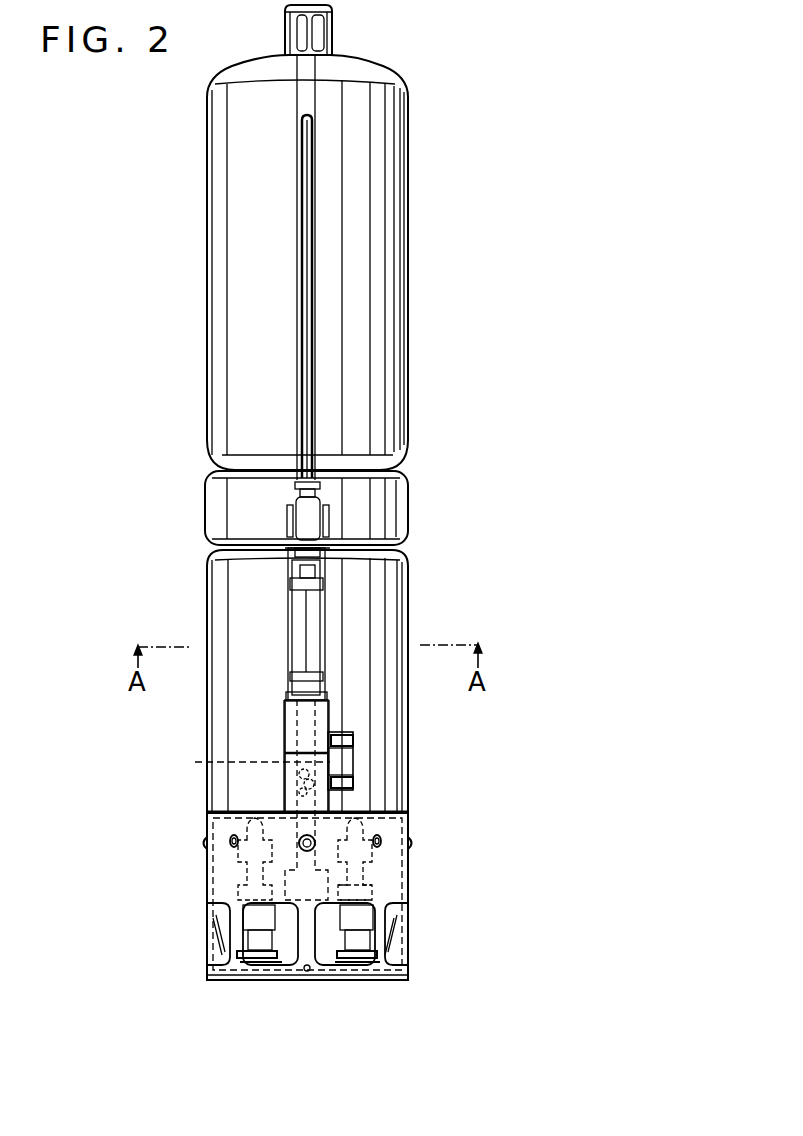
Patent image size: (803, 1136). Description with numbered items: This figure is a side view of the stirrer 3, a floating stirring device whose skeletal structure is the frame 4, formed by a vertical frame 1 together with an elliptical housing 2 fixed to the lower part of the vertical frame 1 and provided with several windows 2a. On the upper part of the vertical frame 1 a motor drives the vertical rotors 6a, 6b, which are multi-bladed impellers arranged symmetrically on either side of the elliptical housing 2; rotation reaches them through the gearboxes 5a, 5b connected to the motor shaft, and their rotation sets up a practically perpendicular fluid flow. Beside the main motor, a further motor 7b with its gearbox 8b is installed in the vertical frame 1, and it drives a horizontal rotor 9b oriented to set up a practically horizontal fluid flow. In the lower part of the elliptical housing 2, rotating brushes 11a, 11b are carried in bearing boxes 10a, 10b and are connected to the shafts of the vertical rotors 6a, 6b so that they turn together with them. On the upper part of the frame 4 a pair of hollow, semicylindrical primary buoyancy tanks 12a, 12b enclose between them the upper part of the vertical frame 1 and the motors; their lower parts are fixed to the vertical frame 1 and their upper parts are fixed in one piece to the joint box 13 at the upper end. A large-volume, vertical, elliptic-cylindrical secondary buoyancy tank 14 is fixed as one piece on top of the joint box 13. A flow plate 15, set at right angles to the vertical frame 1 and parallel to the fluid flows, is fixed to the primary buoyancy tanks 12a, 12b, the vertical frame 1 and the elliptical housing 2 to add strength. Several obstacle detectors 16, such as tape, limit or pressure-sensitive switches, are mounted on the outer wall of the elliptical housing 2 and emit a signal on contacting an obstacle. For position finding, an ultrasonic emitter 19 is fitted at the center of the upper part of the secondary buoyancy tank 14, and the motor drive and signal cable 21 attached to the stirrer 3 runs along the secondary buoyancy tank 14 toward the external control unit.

The ultrasonic emitter 19 is at (322, 32).
The motor drive and signal cable 21 is at (313, 227).
The secondary buoyancy tank 14 is at (395, 280).
The joint box 13 is at (390, 497).
The stirrer 3 is at (414, 577).
The primary buoyancy tank 12a is at (220, 614).
The primary buoyancy tank 12b is at (392, 607).
The motor 7b is at (317, 653).
The flow plate 15 is at (283, 726).
The vertical frame 1 is at (285, 752).
The horizontal rotor 9b is at (246, 772).
The gearbox 8b is at (347, 762).
The gearbox 5a is at (269, 813).
The vertical rotor 6a is at (240, 836).
The vertical rotor 6b is at (378, 852).
The frame 4 is at (410, 818).
The obstacle detectors 16 is at (203, 843).
The elliptical housing 2 is at (212, 885).
The gearbox 5b is at (372, 896).
The bearing box 10a is at (258, 912).
The bearing box 10b is at (360, 912).
The rotating brush 11a is at (277, 966).
The rotating brush 11b is at (355, 966).
The windows 2a is at (289, 964).